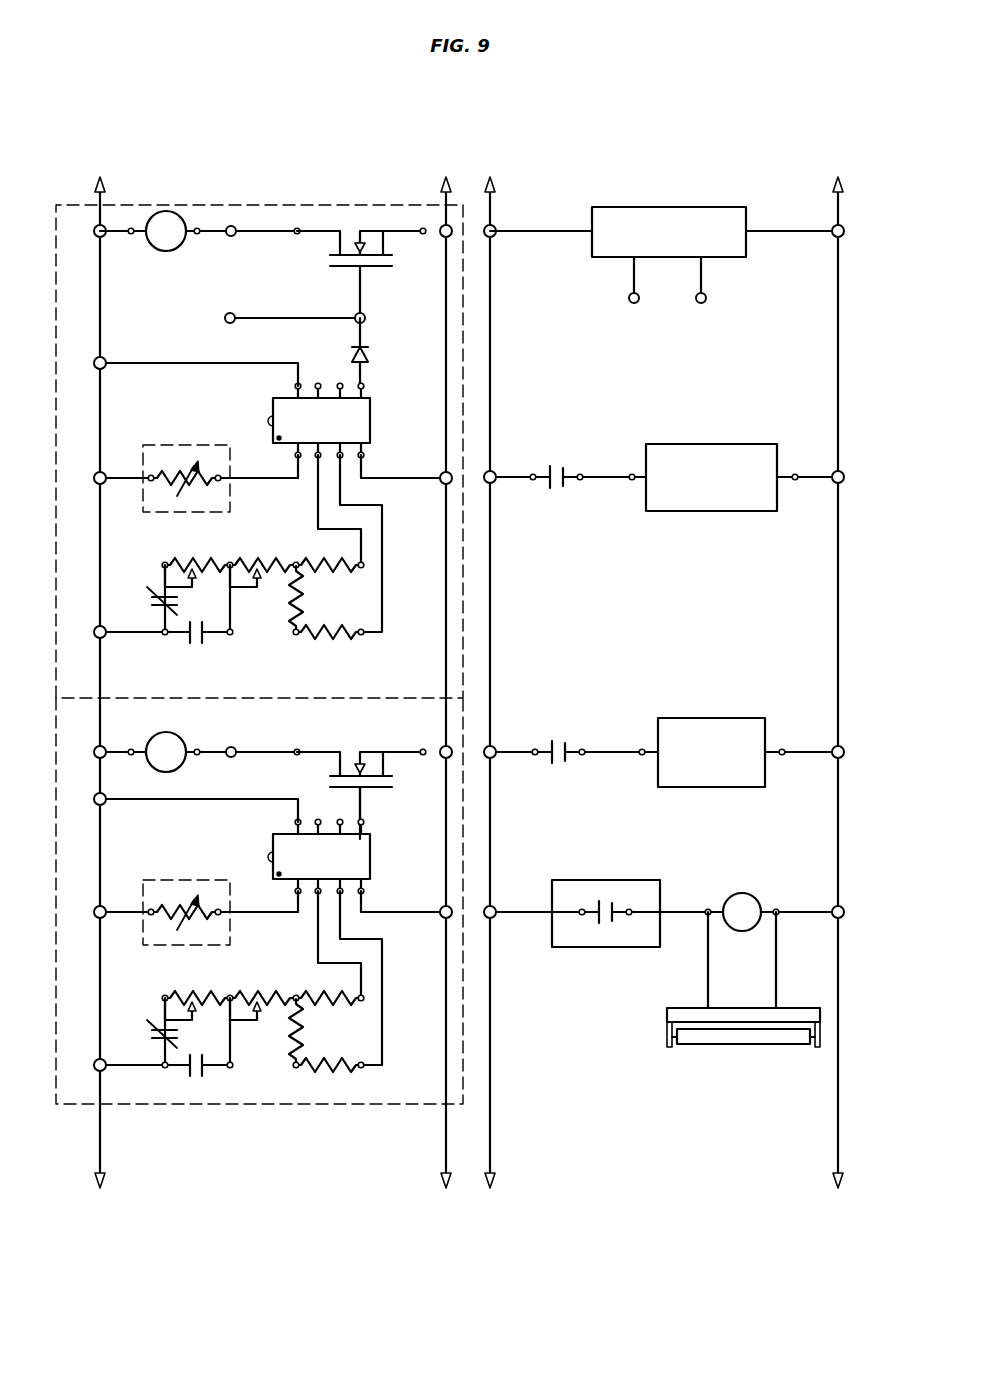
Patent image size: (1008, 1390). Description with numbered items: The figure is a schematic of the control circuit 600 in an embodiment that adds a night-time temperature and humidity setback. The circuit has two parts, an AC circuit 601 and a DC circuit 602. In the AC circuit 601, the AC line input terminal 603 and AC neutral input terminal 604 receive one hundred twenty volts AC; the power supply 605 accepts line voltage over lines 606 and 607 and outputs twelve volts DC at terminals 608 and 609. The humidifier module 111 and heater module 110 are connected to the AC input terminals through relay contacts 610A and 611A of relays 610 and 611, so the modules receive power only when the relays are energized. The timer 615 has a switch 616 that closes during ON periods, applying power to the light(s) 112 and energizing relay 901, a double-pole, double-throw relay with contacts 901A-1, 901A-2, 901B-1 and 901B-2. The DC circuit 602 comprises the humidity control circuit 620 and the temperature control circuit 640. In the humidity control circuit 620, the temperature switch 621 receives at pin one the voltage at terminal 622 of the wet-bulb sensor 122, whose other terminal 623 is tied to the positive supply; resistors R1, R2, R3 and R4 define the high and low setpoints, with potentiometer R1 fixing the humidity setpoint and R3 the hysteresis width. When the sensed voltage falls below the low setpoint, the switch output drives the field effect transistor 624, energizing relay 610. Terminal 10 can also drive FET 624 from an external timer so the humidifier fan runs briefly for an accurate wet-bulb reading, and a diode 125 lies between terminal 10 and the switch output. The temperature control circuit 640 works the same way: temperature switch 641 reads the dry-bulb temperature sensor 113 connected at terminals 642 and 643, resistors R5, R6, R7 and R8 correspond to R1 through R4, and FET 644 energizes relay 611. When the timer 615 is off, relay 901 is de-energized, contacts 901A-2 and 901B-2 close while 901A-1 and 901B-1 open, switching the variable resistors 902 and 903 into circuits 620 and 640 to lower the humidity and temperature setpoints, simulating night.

The AC circuit 601 is at (720, 133).
The DC circuit 602 is at (272, 131).
The control circuit 600 is at (840, 557).
The AC line input terminal 603 is at (496, 229).
The AC neutral input terminal 604 is at (846, 238).
The power supply 605 is at (736, 262).
The line 606 is at (798, 228).
The line 607 is at (533, 235).
The terminal 608 is at (106, 236).
The terminal 609 is at (440, 238).
The relay 610 is at (180, 246).
The relay 611 is at (181, 741).
The relay contact 610A is at (545, 486).
The relay contact 611A is at (570, 765).
The humidifier module 111 is at (738, 513).
The heater module 110 is at (738, 788).
The timer 615 is at (562, 948).
The switch 616 is at (622, 900).
The relay 901 is at (757, 895).
The light(s) 112 is at (666, 1030).
The humidity control circuit 620 is at (72, 205).
The temperature control circuit 640 is at (72, 1096).
The field effect transistor 624 is at (330, 258).
The FET 644 is at (393, 789).
The terminal 10 is at (222, 318).
The diode 125 is at (371, 356).
The temperature switch 621 is at (372, 421).
The temperature switch 641 is at (372, 858).
The wet-bulb sensor 122 is at (175, 474).
The dry-bulb temperature sensor 113 is at (174, 908).
The terminal 622 is at (221, 474).
The terminal 623 is at (148, 474).
The sensor terminal 642 is at (221, 908).
The sensor terminal 643 is at (148, 908).
The variable resistor 902 is at (196, 560).
The variable resistor 903 is at (196, 994).
The variable resistor R1 is at (258, 561).
The resistor R2 is at (330, 562).
The resistor R3 is at (303, 594).
The resistor R4 is at (344, 636).
The variable resistor R5 is at (253, 994).
The resistor R6 is at (326, 995).
The resistor R7 is at (303, 1027).
The resistor R8 is at (343, 1068).
The contact 901A-1 is at (209, 632).
The contact 901A-2 is at (158, 606).
The contact 901B-1 is at (209, 1065).
The contact 901B-2 is at (158, 1039).